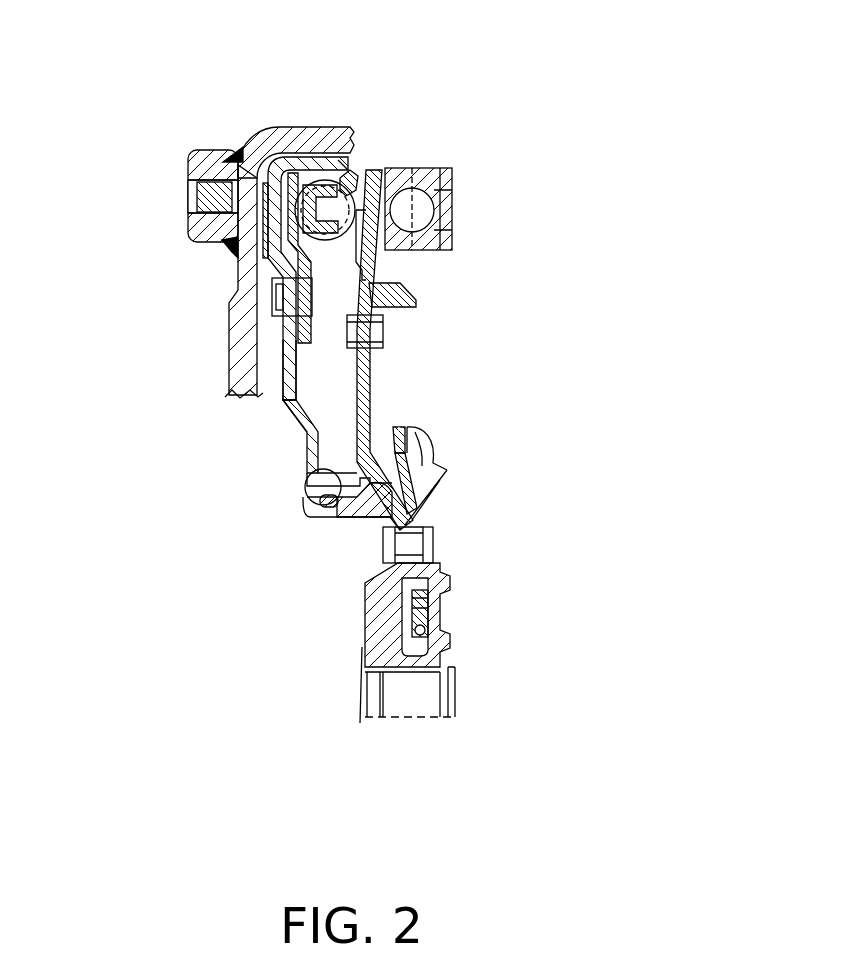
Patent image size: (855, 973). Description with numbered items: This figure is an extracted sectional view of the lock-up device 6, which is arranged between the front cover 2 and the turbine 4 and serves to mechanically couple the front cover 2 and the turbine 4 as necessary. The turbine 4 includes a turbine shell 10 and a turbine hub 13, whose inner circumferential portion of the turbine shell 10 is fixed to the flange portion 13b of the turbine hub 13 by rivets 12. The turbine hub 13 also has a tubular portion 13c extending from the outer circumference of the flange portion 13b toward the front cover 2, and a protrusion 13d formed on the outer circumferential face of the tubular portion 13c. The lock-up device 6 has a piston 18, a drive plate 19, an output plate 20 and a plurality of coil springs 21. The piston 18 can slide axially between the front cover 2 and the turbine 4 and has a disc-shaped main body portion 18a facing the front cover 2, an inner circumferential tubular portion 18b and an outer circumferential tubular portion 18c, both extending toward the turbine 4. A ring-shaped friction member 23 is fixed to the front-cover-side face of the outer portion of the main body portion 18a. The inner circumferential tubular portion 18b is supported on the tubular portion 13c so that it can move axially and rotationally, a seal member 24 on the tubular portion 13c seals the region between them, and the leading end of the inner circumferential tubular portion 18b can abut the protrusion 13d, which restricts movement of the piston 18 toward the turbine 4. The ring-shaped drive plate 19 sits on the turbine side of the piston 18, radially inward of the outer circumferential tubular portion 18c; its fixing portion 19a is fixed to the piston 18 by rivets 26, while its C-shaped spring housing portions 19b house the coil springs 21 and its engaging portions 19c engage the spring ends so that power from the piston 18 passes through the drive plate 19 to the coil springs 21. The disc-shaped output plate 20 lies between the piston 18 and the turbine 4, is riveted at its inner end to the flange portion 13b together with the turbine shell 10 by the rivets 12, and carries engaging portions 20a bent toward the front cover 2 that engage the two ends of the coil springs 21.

The front cover 2 is at (237, 310).
The turbine 4 is at (440, 437).
The lock-up device 6 is at (275, 418).
The turbine shell 10 is at (402, 430).
The rivets 12 is at (415, 540).
The turbine hub 13 is at (350, 657).
The flange portion 13b is at (433, 517).
The tubular portion 13c is at (350, 507).
The protrusion 13d is at (418, 488).
The piston 18 is at (300, 440).
The main body portion 18a is at (283, 368).
The inner circumferential tubular portion 18b is at (308, 478).
The outer circumferential tubular portion 18c is at (327, 157).
The drive plate 19 is at (315, 275).
The fixing portion 19a is at (296, 337).
The spring housing portions 19b is at (367, 162).
The engaging portions 19c is at (237, 248).
The output plate 20 is at (380, 380).
The engaging portions 20a is at (297, 150).
The coil springs 21 is at (357, 183).
The friction member 23 is at (236, 150).
The seal member 24 is at (313, 512).
The rivets 26 is at (400, 298).